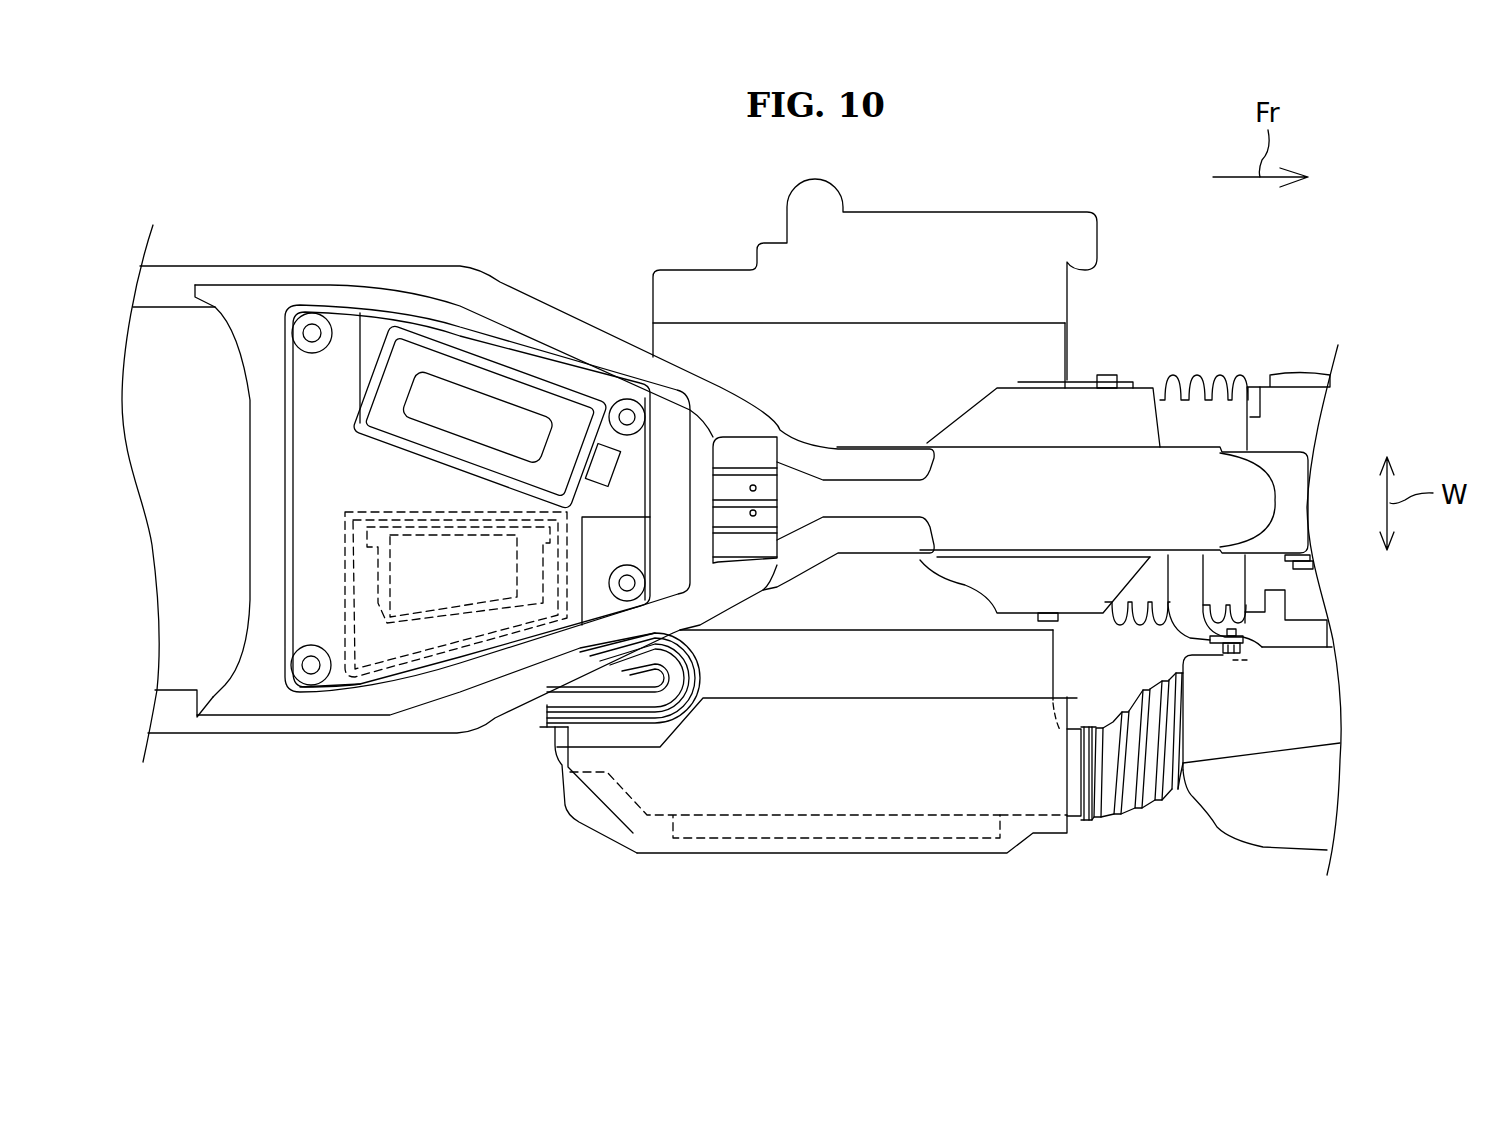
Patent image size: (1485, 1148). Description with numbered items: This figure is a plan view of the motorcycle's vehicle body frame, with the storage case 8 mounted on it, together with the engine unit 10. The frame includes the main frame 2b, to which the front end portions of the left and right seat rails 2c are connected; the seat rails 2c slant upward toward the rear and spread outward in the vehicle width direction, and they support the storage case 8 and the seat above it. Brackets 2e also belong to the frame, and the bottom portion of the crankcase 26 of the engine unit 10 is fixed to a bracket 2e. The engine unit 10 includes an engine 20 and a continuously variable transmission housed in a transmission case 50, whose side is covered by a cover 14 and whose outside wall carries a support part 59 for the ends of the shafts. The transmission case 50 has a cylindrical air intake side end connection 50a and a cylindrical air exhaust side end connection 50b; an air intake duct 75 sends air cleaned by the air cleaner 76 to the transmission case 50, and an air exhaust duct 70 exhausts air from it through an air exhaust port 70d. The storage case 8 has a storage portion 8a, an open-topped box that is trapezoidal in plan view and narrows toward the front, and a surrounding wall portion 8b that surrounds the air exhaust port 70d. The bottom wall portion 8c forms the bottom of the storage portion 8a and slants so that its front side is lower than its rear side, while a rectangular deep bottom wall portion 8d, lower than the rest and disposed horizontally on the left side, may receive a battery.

The main frame 2b is at (1123, 470).
The seat rail 2c is at (303, 278).
The bracket 2e is at (992, 407).
The storage case 8 is at (230, 491).
The storage portion 8a is at (292, 524).
The surrounding wall portion 8b is at (410, 653).
The bottom wall portion 8c is at (370, 650).
The deep bottom wall portion 8d is at (470, 373).
The engine unit 10 is at (1033, 203).
The cover 14 is at (655, 853).
The engine 20 is at (1210, 413).
The crankcase 26 is at (1053, 347).
The transmission case 50 is at (1035, 820).
The air intake side end connection 50a is at (1073, 812).
The air exhaust side end connection 50b is at (698, 672).
The support part 59 is at (903, 842).
The air exhaust duct 70 is at (548, 706).
The air exhaust port 70d is at (495, 660).
The air intake duct 75 is at (1138, 810).
The air cleaner 76 is at (1257, 833).